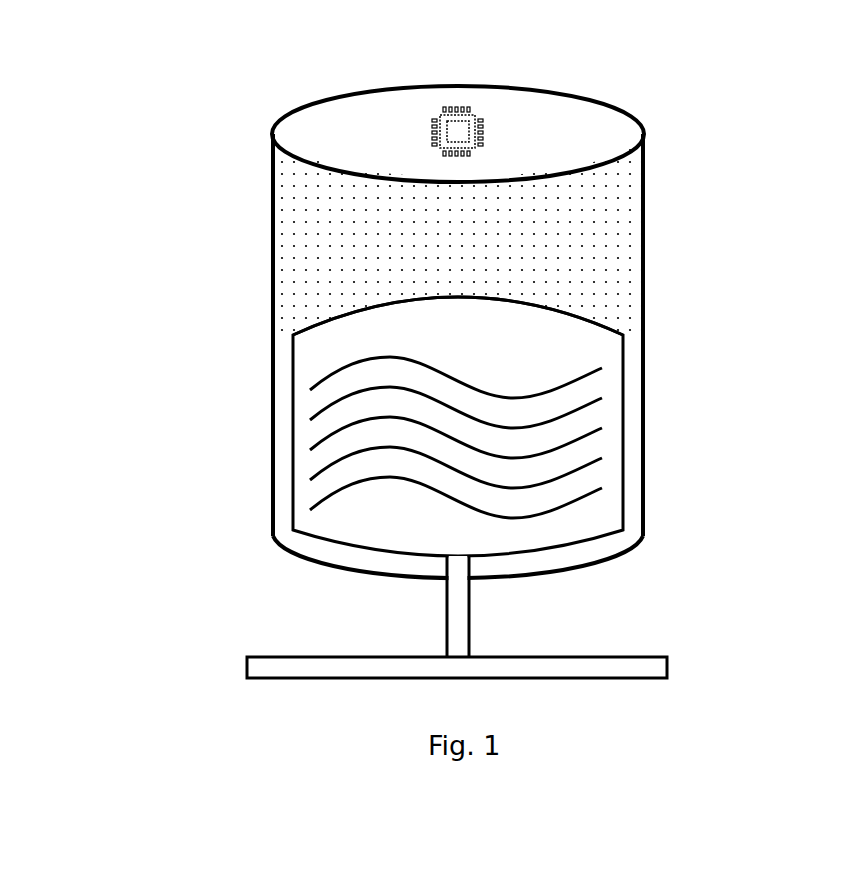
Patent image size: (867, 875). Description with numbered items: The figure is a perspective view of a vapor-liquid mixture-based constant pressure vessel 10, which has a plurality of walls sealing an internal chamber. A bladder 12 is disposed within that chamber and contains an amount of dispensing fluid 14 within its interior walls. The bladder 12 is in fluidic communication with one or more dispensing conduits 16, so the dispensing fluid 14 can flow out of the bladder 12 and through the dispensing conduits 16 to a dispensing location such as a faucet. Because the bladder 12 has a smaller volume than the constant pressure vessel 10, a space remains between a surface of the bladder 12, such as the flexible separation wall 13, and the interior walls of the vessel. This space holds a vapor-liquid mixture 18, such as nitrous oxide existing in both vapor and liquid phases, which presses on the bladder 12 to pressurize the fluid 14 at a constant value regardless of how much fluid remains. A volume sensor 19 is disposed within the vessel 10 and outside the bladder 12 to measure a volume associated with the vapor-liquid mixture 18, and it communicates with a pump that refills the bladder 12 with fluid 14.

The constant pressure vessel 10 is at (158, 92).
The bladder 12 is at (483, 420).
The flexible separation wall 13 is at (612, 328).
The dispensing fluid 14 is at (335, 353).
The dispensing conduits 16 is at (277, 656).
The vapor-liquid mixture 18 is at (587, 250).
The volume sensor 19 is at (475, 117).